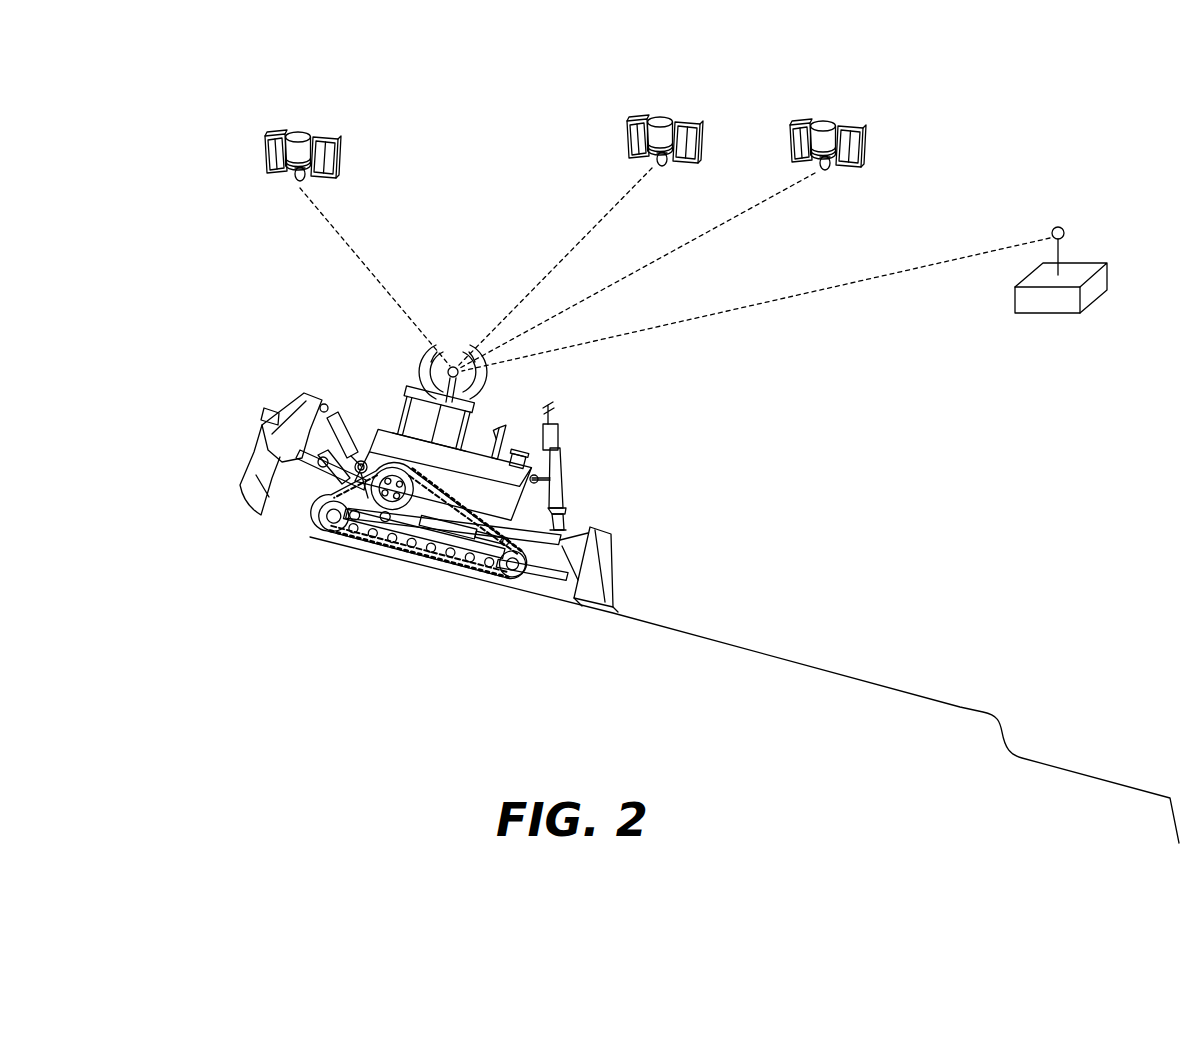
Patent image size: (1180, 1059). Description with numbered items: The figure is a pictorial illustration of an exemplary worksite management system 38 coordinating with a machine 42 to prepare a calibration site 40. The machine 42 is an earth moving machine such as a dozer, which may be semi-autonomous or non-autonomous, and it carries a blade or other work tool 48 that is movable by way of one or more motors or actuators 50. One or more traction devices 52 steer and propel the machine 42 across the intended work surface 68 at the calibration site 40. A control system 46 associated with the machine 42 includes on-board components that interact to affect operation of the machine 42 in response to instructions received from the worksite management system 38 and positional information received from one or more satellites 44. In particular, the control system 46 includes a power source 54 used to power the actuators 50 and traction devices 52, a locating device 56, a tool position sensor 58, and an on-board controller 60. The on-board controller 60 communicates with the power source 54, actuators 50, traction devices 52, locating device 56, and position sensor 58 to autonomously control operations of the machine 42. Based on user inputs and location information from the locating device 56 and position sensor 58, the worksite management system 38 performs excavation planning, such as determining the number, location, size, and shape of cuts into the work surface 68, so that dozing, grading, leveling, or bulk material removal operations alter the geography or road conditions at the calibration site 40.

The worksite management system 38 is at (1085, 278).
The calibration site 40 is at (1066, 453).
The machine 42 is at (458, 449).
The satellites 44 is at (297, 128).
The control system 46 is at (452, 336).
The work tool 48 is at (603, 550).
The actuators 50 is at (558, 490).
The traction devices 52 is at (325, 516).
The power source 54 is at (520, 512).
The locating device 56 is at (455, 402).
The tool position sensor 58 is at (557, 432).
The on-board controller 60 is at (430, 428).
The intended work surface 68 is at (834, 593).